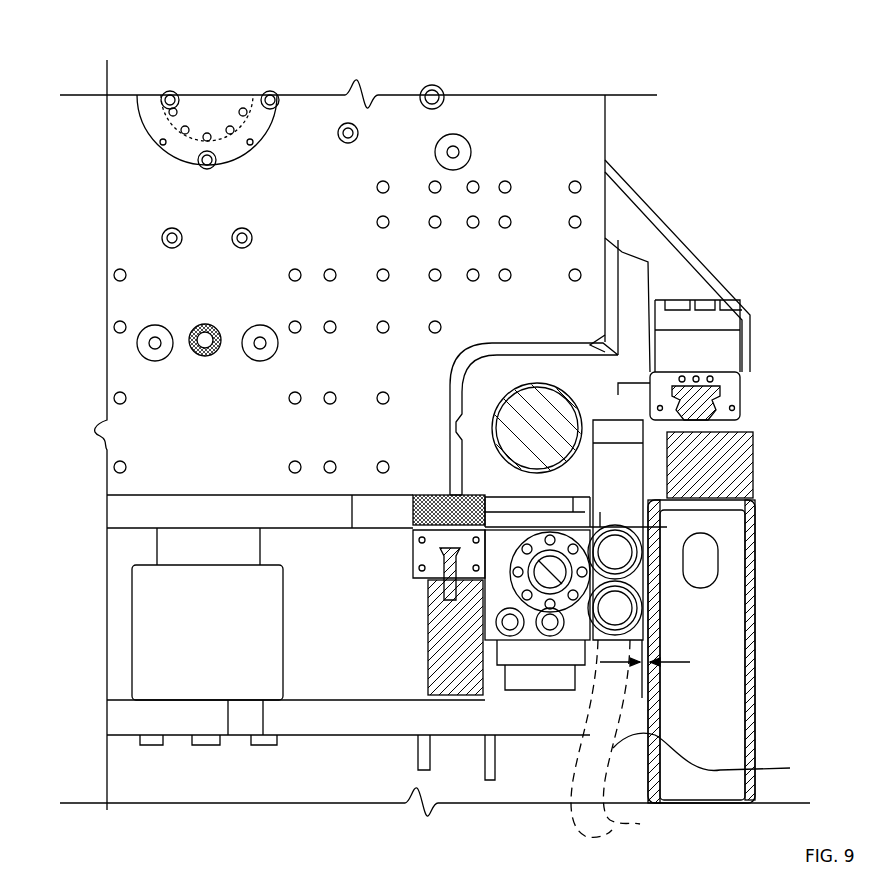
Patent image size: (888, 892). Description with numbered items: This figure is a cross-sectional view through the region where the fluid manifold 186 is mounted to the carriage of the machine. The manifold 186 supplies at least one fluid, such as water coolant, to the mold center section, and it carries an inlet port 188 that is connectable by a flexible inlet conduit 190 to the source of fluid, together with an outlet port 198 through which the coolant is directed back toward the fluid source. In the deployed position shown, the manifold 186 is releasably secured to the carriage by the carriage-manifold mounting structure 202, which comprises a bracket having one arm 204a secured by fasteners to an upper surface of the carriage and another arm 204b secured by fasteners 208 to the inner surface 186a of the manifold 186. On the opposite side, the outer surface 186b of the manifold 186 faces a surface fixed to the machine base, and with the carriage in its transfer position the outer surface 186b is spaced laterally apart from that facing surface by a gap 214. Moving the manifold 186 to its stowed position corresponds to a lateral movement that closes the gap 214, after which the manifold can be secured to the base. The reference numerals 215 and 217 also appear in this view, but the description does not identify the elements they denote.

The fluid manifold 186 is at (620, 490).
The inner surface of the manifold 186a is at (593, 420).
The outer surface of the manifold 186b is at (645, 465).
The inlet port 188 is at (623, 600).
The flexible inlet conduit 190 is at (640, 824).
The outlet port 198 is at (623, 553).
The carriage-manifold mounting structure 202 is at (466, 456).
The arm of the bracket 204a is at (535, 505).
The arm of the bracket 204b is at (593, 487).
The fasteners 208 is at (575, 483).
The gap 214 is at (662, 523).
The gap 215 is at (655, 668).
The rail flange 217 is at (719, 755).